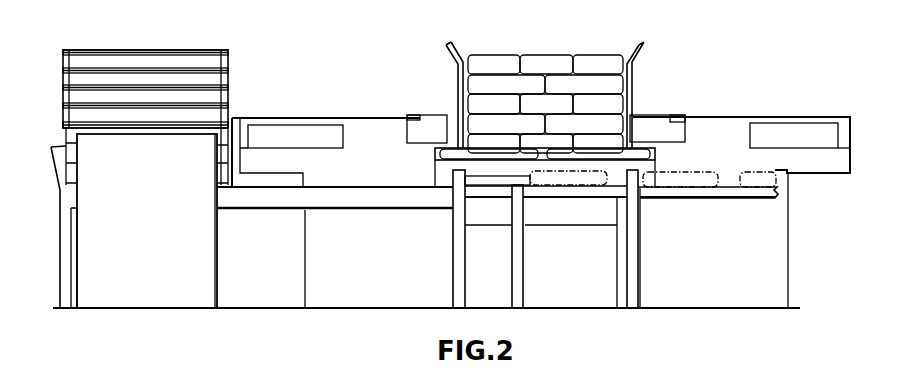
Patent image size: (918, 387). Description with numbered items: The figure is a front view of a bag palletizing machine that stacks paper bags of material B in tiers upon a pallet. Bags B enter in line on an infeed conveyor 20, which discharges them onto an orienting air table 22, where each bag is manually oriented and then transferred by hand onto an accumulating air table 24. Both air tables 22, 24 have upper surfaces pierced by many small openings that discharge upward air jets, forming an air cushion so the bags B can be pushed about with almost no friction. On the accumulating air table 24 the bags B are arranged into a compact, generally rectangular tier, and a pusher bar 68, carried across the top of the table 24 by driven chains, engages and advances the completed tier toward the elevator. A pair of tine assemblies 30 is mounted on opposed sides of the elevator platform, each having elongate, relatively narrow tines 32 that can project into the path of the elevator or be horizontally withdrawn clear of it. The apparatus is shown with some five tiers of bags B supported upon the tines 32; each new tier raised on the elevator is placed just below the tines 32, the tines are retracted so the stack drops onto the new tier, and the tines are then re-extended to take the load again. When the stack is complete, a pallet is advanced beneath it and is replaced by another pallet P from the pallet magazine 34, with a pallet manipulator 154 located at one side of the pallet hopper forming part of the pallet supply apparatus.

The infeed conveyor 20 is at (712, 204).
The orienting air table 22 is at (571, 200).
The accumulating air table 24 is at (489, 199).
The tine assemblies 30 is at (374, 111).
The tines 32 is at (455, 146).
The pallet magazine 34 is at (153, 80).
The pusher bar 68 is at (478, 179).
The pallet manipulator 154 is at (150, 262).
The bags B is at (578, 64).
The pallets P is at (63, 100).